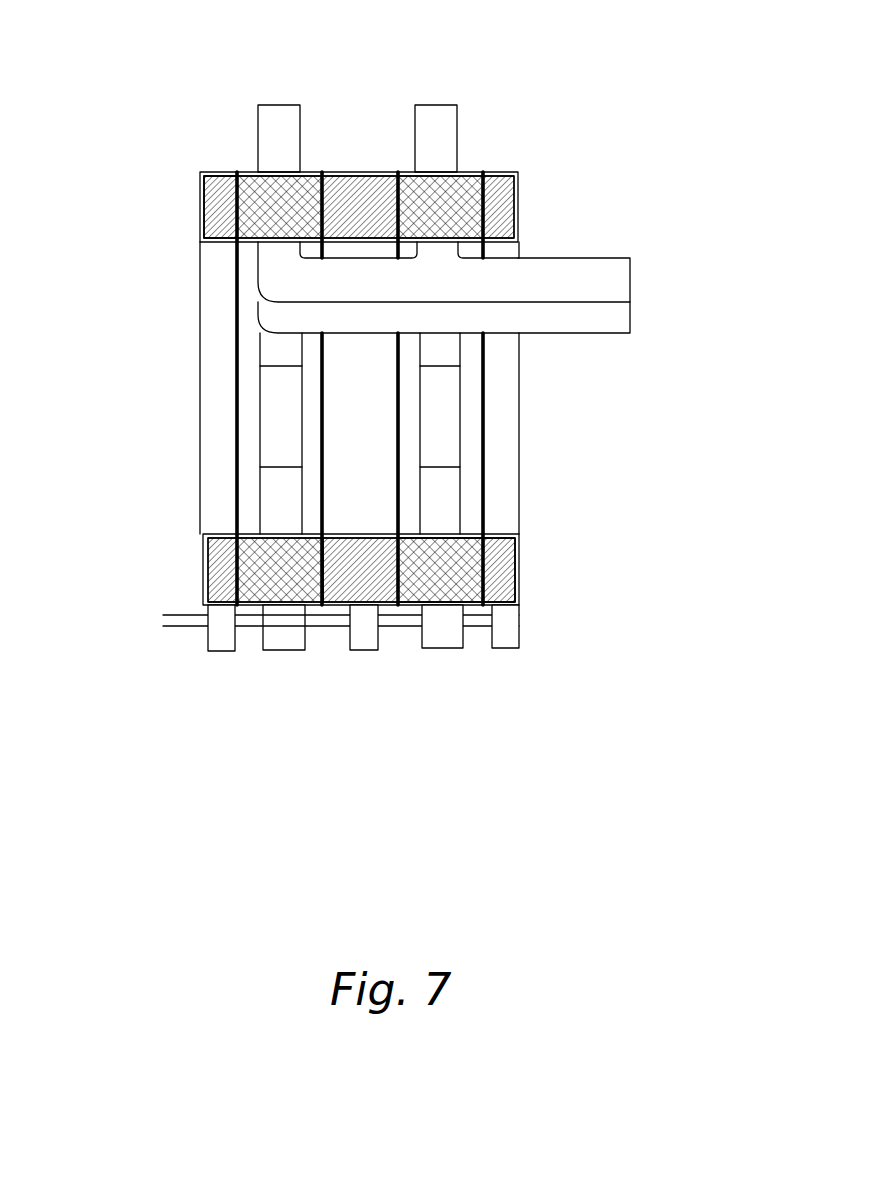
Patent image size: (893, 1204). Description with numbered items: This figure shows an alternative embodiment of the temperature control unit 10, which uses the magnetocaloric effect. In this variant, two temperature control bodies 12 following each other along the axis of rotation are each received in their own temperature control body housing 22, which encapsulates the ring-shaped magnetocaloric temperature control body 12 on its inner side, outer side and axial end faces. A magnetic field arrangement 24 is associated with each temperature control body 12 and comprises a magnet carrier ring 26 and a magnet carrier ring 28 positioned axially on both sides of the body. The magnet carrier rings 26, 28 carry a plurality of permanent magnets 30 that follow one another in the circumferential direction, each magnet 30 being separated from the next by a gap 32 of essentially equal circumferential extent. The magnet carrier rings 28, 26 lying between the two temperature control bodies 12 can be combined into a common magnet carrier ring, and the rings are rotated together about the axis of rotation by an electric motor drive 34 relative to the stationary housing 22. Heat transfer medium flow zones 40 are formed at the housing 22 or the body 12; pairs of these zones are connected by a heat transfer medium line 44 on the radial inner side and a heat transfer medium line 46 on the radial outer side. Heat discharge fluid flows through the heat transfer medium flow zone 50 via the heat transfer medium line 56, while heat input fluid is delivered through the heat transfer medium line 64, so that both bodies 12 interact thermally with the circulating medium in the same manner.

The temperature control unit 10 is at (618, 164).
The temperature control body 12 is at (262, 216).
The temperature control body housing 22 is at (468, 532).
The magnetic field arrangement 24 is at (150, 270).
The magnet carrier ring 26 is at (200, 192).
The magnet carrier ring 28 is at (332, 170).
The permanent magnet 30 is at (218, 582).
The gap 32 is at (505, 550).
The electric motor drive 34 is at (222, 652).
The heat transfer medium flow zone 40 is at (414, 634).
The heat transfer medium line 44 is at (463, 488).
The heat transfer medium line 46 is at (447, 635).
The heat transfer medium discharge flow zone 50 is at (470, 148).
The heat transfer medium line 56 is at (618, 285).
The heat transfer medium line 64 is at (620, 322).